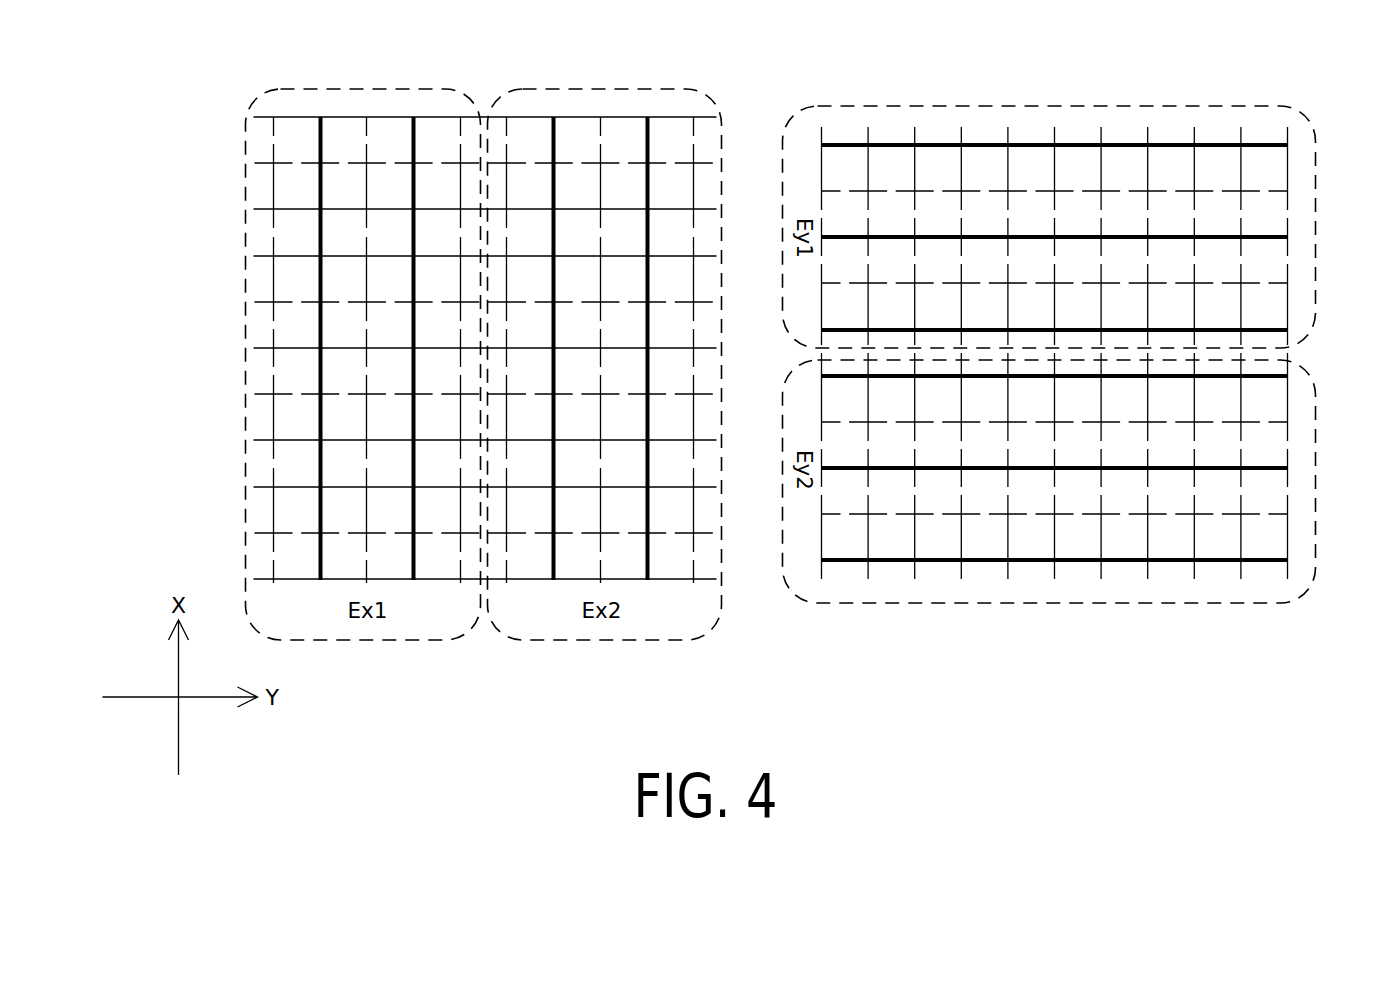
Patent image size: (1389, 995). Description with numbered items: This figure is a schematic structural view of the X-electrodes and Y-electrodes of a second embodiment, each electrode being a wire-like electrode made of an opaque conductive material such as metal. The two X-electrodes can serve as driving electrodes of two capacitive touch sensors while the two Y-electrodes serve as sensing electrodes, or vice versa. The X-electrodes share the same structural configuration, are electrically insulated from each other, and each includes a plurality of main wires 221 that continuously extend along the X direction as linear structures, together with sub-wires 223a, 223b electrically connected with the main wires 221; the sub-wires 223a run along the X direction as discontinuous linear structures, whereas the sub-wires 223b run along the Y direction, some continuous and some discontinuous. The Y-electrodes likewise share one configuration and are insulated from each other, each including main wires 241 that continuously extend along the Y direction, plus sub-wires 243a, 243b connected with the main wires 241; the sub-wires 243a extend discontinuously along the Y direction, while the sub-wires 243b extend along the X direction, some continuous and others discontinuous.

The main wires 221 is at (322, 128).
The sub-wires 223a is at (274, 179).
The sub-wires 223b is at (268, 255).
The main wires 241 is at (898, 143).
The sub-wires 243a is at (1277, 283).
The sub-wires 243b is at (1290, 168).